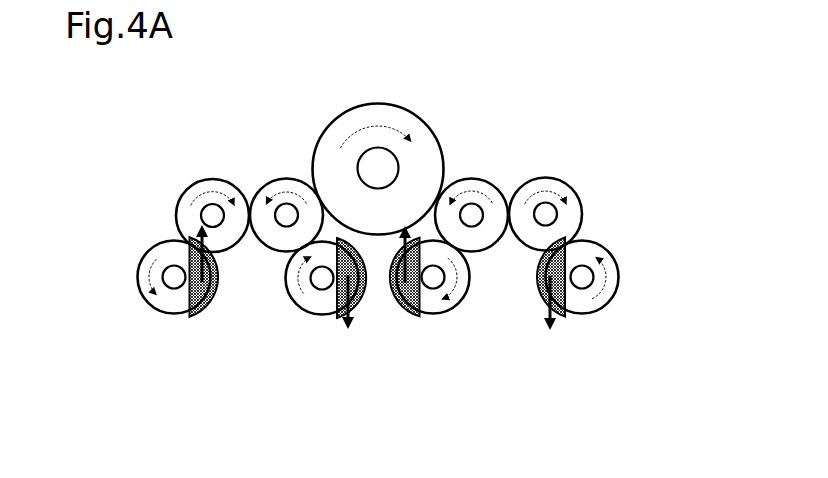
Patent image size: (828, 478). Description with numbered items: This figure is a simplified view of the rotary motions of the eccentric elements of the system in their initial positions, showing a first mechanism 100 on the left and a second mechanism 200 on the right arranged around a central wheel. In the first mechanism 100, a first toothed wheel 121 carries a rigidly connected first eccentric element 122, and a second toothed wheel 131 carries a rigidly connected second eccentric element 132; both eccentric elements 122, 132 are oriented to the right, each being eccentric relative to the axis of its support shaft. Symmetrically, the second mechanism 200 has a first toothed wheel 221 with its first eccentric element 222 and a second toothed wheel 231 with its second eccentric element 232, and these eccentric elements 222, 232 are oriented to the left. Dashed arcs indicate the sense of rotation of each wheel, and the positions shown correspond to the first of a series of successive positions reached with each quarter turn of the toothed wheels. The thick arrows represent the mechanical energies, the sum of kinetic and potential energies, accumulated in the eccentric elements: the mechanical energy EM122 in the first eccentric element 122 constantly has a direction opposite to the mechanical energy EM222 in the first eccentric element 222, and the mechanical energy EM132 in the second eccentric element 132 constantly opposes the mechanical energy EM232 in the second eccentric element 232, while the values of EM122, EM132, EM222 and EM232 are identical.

The first mechanism 100 is at (236, 146).
The second mechanism 200 is at (502, 147).
The first toothed wheel 121 is at (148, 308).
The first eccentric element 122 is at (189, 312).
The mechanical energy accumulated in the first eccentric element of the first mechan EM122 is at (204, 314).
The second toothed wheel 131 is at (298, 316).
The second eccentric element 132 is at (338, 320).
The mechanical energy accumulated in the second eccentric element of the first mecha EM132 is at (347, 327).
The first toothed wheel 221 is at (605, 310).
The first eccentric element 222 is at (562, 317).
The mechanical energy accumulated in the first eccentric element of the second mecha EM222 is at (555, 332).
The second toothed wheel 231 is at (460, 312).
The second eccentric element 232 is at (420, 313).
The mechanical energy accumulated in the second eccentric element of the second mech EM232 is at (404, 312).